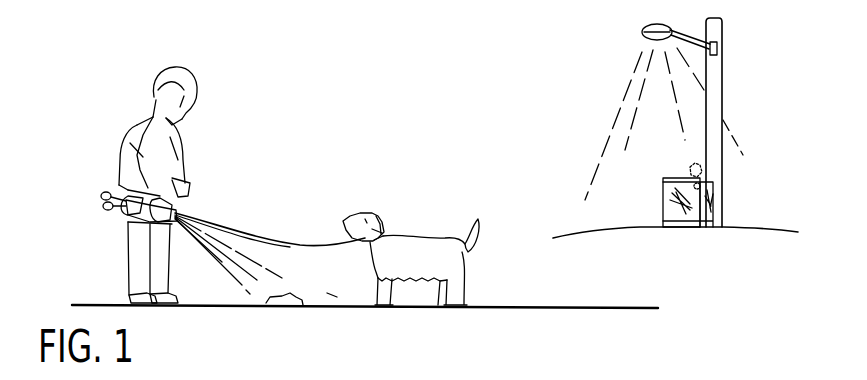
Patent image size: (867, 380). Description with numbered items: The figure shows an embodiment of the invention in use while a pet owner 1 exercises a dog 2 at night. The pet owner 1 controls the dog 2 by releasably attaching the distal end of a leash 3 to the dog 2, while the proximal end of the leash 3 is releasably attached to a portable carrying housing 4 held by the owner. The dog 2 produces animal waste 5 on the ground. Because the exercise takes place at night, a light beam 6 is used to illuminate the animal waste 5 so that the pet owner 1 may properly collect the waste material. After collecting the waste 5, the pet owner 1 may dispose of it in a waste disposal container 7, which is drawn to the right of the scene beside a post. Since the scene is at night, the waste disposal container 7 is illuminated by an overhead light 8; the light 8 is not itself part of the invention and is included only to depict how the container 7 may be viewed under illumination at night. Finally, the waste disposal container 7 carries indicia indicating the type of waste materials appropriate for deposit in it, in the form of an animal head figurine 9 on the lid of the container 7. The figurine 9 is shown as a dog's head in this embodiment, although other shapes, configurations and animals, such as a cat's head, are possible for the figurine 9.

The pet owner 1 is at (130, 132).
The dog 2 is at (425, 237).
The leash 3 is at (214, 223).
The portable carrying housing 4 is at (120, 225).
The animal waste 5 is at (299, 295).
The light beam 6 is at (273, 256).
The waste disposal container 7 is at (661, 207).
The overhead light 8 is at (643, 30).
The animal head figurine 9 is at (692, 170).